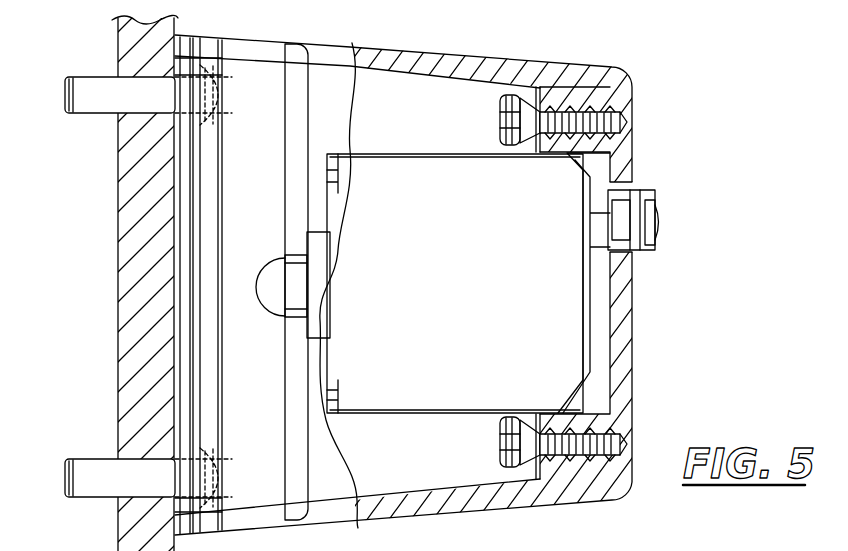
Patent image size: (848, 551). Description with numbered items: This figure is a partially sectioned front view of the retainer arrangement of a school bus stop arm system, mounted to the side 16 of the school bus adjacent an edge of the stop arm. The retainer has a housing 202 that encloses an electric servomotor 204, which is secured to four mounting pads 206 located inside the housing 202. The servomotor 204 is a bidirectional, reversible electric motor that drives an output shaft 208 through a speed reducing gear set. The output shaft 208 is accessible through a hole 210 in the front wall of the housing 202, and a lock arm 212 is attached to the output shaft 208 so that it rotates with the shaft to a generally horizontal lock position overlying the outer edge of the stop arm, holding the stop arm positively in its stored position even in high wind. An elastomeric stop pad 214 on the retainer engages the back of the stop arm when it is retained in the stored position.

The side of the school bus 16 is at (132, 42).
The housing 202 is at (443, 60).
The electric servomotor 204 is at (427, 170).
The mounting pads 206 is at (583, 94).
The output shaft 208 is at (620, 232).
The hole 210 is at (617, 182).
The lock arm 212 is at (657, 244).
The elastomeric stop pad 214 is at (318, 285).